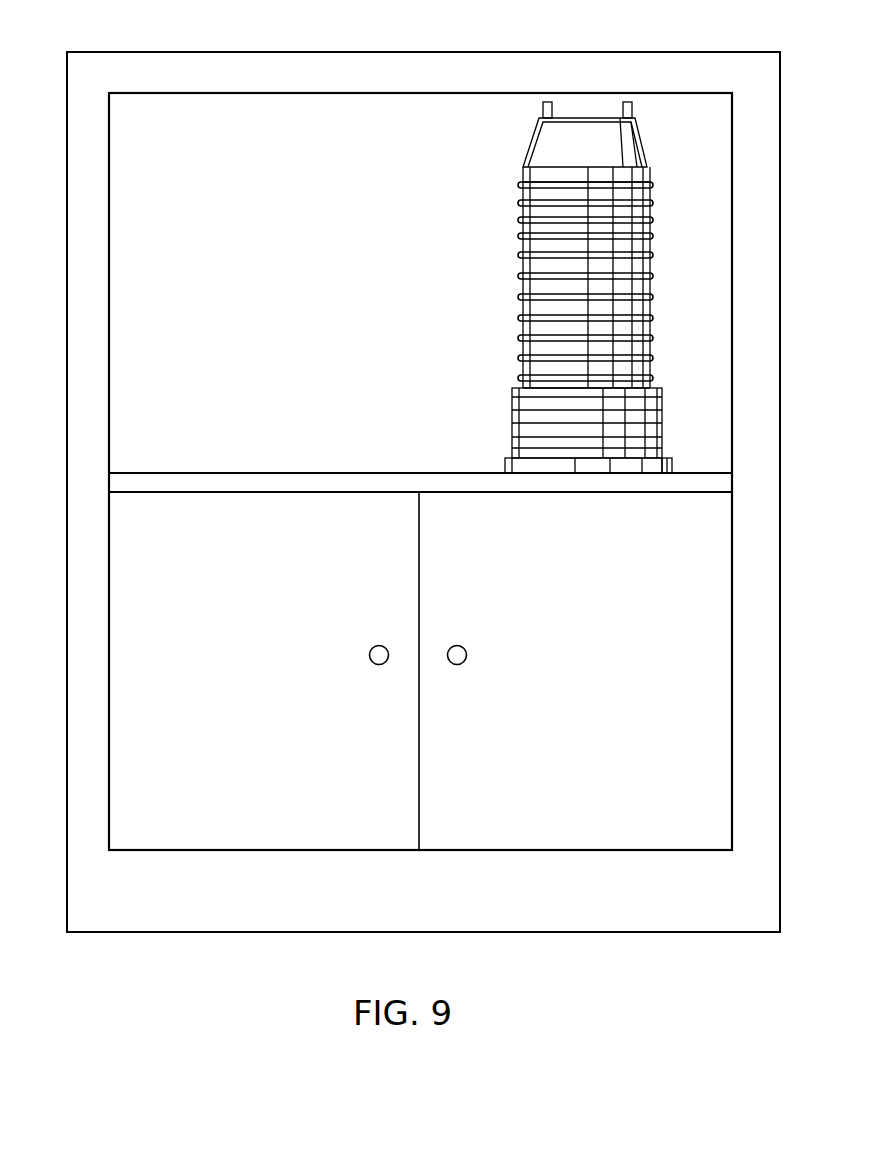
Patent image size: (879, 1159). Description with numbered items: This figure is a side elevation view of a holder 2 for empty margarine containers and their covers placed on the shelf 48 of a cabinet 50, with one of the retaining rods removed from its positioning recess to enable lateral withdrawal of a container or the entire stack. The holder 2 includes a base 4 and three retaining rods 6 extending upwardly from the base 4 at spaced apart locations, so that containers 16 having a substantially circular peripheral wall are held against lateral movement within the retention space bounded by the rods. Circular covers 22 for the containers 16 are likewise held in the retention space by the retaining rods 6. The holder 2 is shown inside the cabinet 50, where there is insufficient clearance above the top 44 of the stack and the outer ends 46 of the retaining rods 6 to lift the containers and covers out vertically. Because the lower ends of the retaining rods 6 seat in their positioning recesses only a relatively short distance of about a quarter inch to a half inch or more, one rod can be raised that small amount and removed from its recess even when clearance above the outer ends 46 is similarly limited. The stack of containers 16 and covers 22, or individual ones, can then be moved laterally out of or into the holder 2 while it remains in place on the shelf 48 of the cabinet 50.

The holder 2 is at (505, 457).
The base 4 is at (665, 458).
The retaining rods 6 is at (541, 110).
The containers 16 is at (528, 152).
The covers 22 is at (512, 388).
The top 44 is at (583, 110).
The outer ends 46 is at (547, 101).
The shelf 48 is at (277, 473).
The cabinet 50 is at (228, 52).